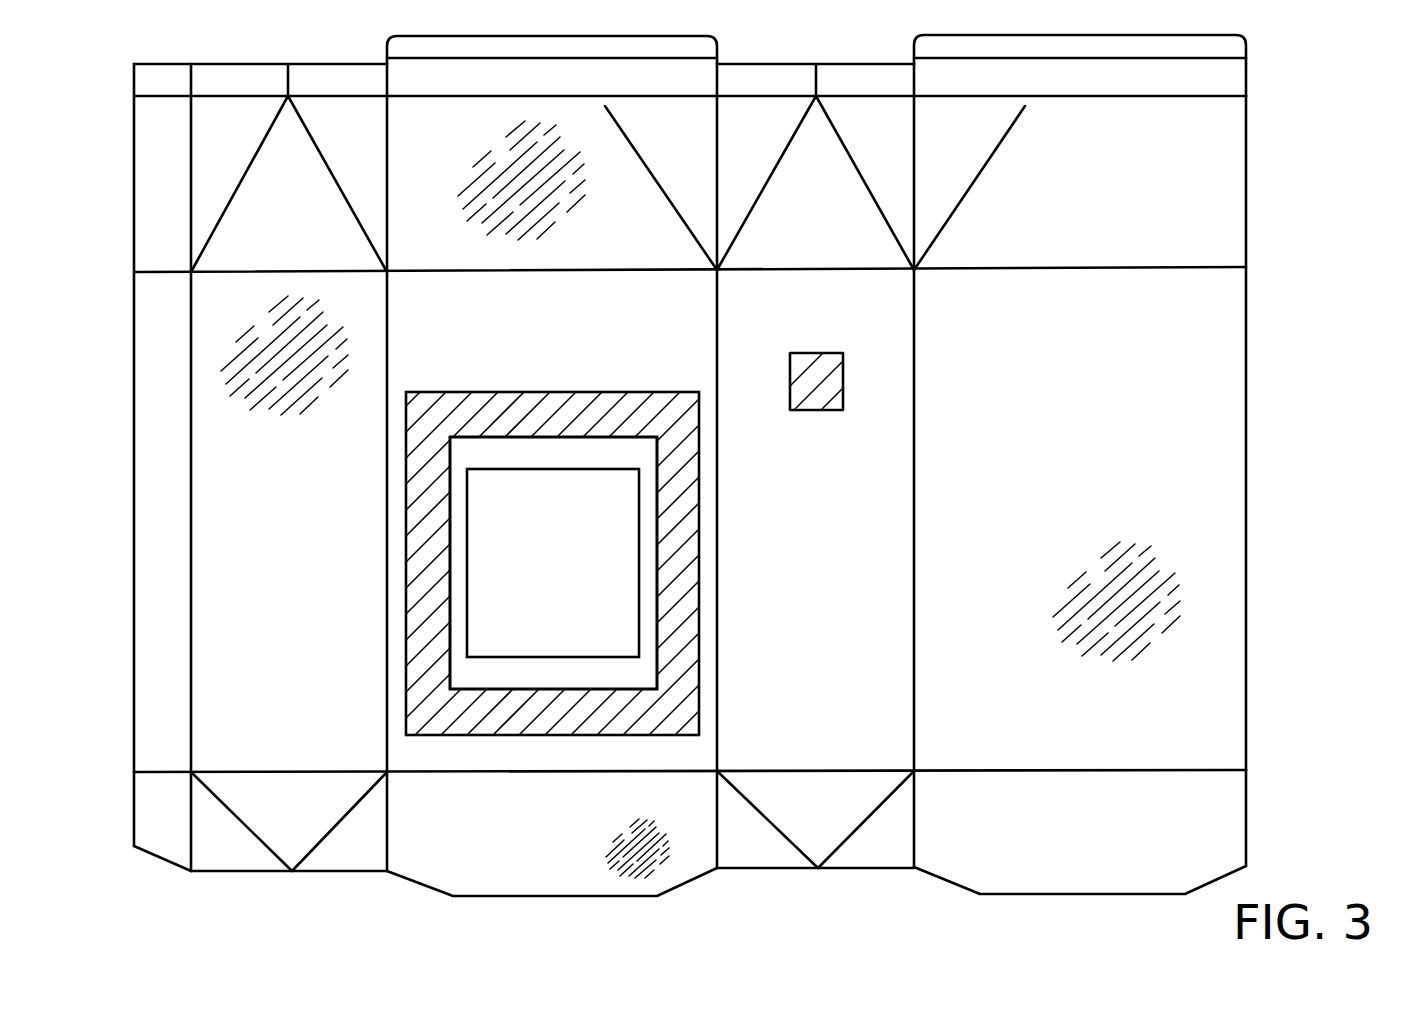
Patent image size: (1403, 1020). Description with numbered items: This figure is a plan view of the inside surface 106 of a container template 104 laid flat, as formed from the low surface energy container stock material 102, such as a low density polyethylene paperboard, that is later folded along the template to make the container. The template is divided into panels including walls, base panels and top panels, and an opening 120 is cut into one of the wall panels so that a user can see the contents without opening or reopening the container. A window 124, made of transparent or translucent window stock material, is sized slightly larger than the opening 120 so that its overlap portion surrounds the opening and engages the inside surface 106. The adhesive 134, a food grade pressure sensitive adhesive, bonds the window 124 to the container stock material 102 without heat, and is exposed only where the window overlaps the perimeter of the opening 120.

The container stock material 102 is at (1270, 84).
The container template 104 is at (1262, 256).
The inside surface 106 is at (868, 533).
The opening 120 is at (490, 551).
The window 124 is at (712, 703).
The adhesive 134 is at (656, 403).